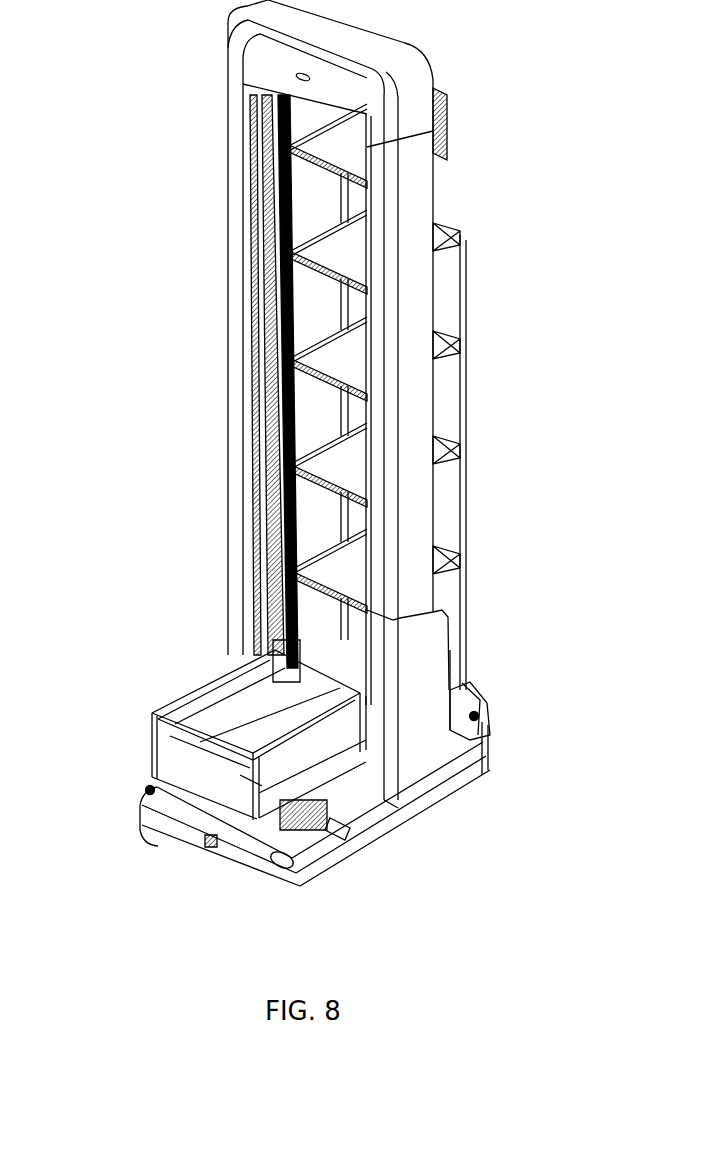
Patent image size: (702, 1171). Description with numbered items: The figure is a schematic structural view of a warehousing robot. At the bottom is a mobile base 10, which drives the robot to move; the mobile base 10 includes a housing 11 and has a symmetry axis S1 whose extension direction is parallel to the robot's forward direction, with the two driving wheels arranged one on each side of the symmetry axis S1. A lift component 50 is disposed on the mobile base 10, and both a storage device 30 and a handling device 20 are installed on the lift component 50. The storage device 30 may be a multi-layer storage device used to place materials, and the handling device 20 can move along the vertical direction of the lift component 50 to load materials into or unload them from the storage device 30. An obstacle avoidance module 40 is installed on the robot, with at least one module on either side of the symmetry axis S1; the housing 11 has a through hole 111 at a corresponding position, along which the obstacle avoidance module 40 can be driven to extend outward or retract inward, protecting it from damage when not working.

The mobile base 10 is at (175, 807).
The housing 11 is at (340, 827).
The through hole 111 is at (148, 788).
The handling device 20 is at (150, 730).
The storage device 30 is at (345, 362).
The obstacle avoidance module 40 is at (479, 716).
The lift component 50 is at (255, 112).
The symmetry axis S1 is at (253, 780).